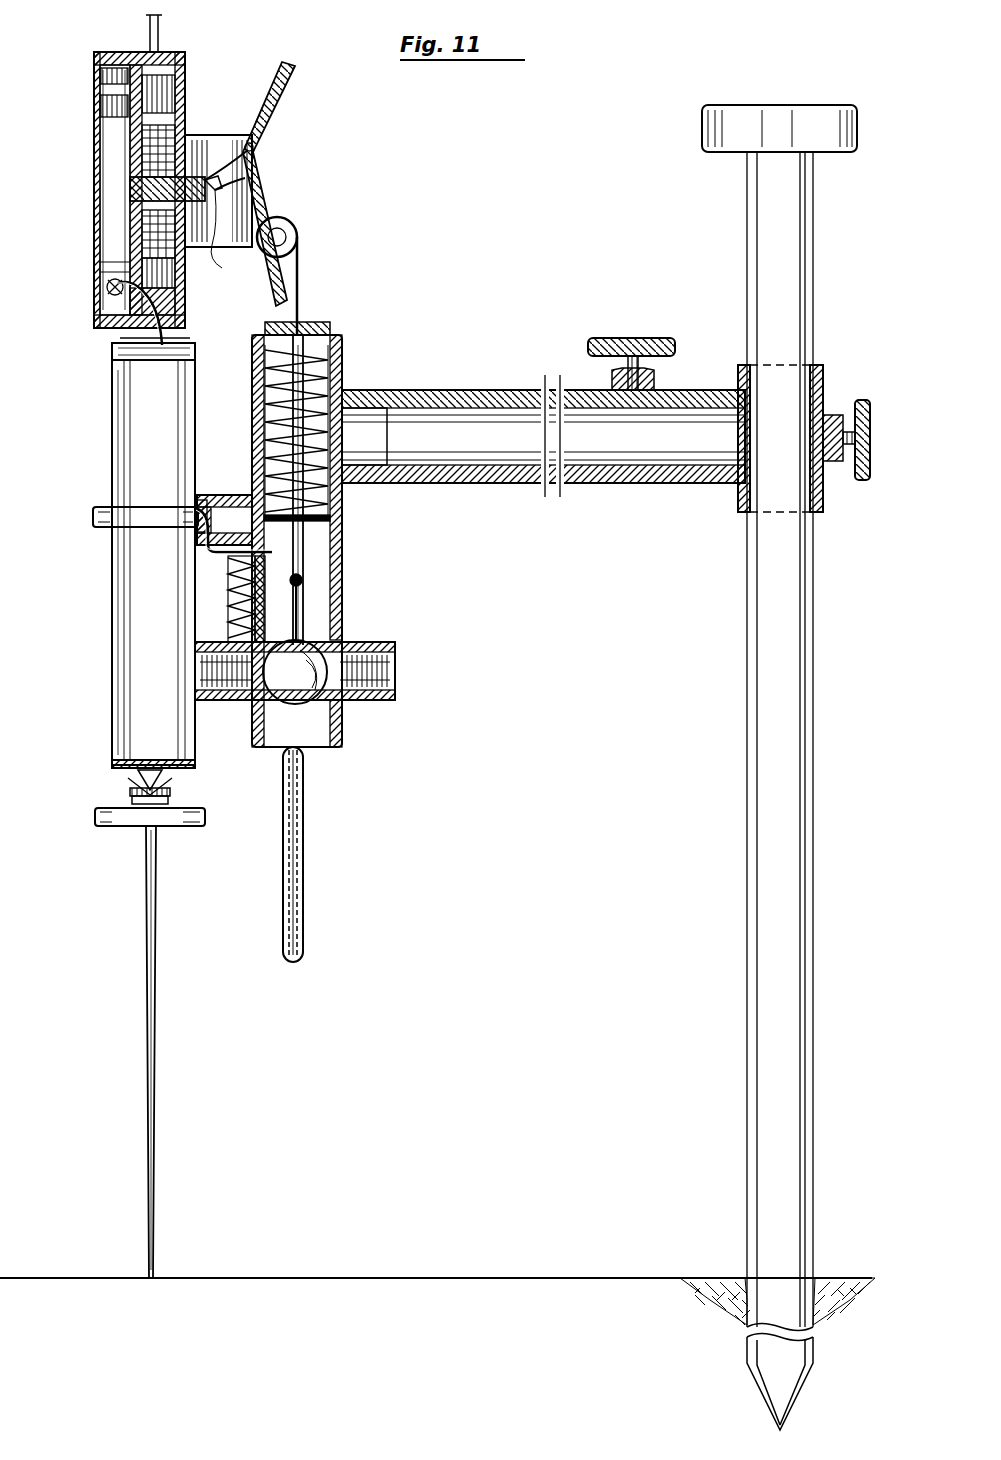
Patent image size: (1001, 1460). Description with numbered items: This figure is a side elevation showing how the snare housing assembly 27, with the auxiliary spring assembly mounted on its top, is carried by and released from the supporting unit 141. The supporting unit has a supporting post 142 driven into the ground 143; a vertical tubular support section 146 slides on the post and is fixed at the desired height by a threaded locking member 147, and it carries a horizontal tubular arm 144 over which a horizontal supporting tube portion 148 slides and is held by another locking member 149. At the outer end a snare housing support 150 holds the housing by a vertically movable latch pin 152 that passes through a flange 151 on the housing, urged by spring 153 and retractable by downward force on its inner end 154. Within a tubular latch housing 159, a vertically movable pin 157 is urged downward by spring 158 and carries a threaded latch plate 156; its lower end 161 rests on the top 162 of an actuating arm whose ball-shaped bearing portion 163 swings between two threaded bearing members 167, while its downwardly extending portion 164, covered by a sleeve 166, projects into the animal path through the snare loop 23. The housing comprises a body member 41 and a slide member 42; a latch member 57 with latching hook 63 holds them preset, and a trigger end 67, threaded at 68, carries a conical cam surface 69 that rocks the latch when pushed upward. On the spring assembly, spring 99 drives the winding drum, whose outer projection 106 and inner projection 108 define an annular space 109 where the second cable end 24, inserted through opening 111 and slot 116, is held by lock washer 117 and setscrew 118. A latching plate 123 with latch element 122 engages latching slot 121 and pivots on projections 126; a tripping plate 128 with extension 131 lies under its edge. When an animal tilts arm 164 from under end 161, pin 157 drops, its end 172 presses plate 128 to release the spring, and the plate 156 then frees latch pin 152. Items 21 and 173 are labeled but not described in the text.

The plunger rod 21 is at (150, 32).
The snare loop 23 is at (148, 995).
The second end of main snare cable 24 is at (118, 296).
The snare housing assembly 27 is at (99, 444).
The snare housing body member 41 is at (116, 682).
The slide member 42 is at (118, 338).
The latch member 57 is at (140, 772).
The latching hook 63 is at (138, 768).
The trigger end 67 is at (125, 826).
The threaded connection 68 is at (155, 780).
The conical cam surface 69 is at (165, 790).
The spring 99 is at (160, 130).
The annular outer projection 106 is at (118, 128).
The inner projection 108 is at (110, 78).
The annular space 109 is at (110, 104).
The casing opening 111 is at (118, 344).
The slot 116 is at (170, 290).
The lock washer 117 is at (112, 267).
The setscrew 118 is at (108, 287).
The latching slot 121 is at (248, 154).
The latch element 122 is at (228, 228).
The latching plate 123 is at (272, 78).
The upwardly extending projections 126 is at (240, 205).
The tripping plate 128 is at (238, 190).
The extension 131 is at (252, 166).
The supporting unit 141 is at (578, 566).
The supporting post 142 is at (747, 790).
The ground 143 is at (728, 1275).
The horizontal tubular arm 144 is at (738, 385).
The vertical tubular support section 146 is at (740, 500).
The threaded locking member 147 is at (862, 482).
The horizontal supporting tube portion 148 is at (430, 390).
The locking member 149 is at (600, 338).
The snare housing support 150 is at (235, 498).
The flange 151 is at (93, 517).
The latch pin 152 is at (205, 545).
The spring 153 is at (226, 598).
The inner end of latch pin 154 is at (305, 547).
The latch plate 156 is at (332, 520).
The vertically movable pin 157 is at (342, 364).
The spring 158 is at (348, 346).
The tubular latch housing 159 is at (334, 575).
The lower end of movable pin 161 is at (302, 580).
The top of actuating arm 162 is at (302, 600).
The ball-shaped bearing portion 163 is at (330, 705).
The actuating arm 164 is at (302, 858).
The sleeve 166 is at (302, 896).
The threaded bearing members 167 is at (395, 672).
The end of operating member 172 is at (283, 240).
The ground surface 173 is at (198, 1269).